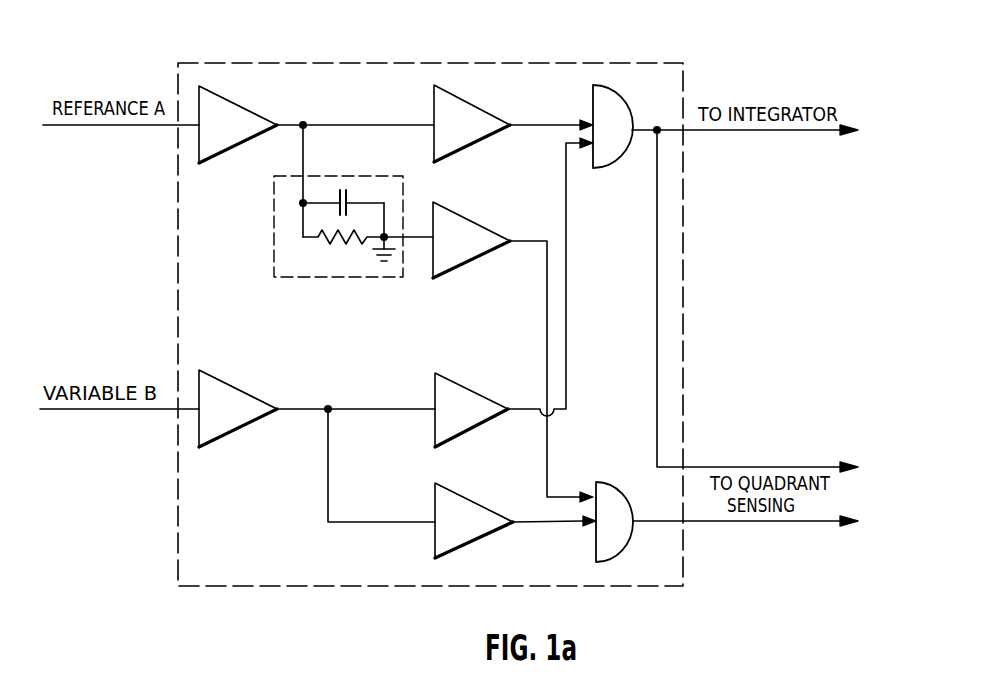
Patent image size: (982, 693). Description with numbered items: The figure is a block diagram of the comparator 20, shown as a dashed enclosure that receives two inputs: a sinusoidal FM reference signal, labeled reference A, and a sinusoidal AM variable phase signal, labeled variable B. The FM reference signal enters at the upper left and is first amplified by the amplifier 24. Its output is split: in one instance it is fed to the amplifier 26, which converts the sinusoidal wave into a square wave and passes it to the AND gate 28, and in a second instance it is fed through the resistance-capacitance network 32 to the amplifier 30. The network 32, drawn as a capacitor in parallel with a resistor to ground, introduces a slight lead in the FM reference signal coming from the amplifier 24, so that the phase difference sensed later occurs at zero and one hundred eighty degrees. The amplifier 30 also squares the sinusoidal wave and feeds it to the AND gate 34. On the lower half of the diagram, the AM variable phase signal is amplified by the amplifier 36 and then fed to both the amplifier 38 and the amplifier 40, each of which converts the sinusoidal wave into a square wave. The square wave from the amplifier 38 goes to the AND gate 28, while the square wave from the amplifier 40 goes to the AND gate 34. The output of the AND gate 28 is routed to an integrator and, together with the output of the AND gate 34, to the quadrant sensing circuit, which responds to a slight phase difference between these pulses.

The comparator 20 is at (311, 63).
The amplifier 24 is at (240, 123).
The amplifier 26 is at (470, 117).
The AND gate 28 is at (622, 115).
The amplifier 30 is at (465, 237).
The resistance-capacitance network 32 is at (343, 176).
The AND gate 34 is at (617, 503).
The amplifier 36 is at (222, 403).
The amplifier 38 is at (457, 398).
The amplifier 40 is at (457, 517).